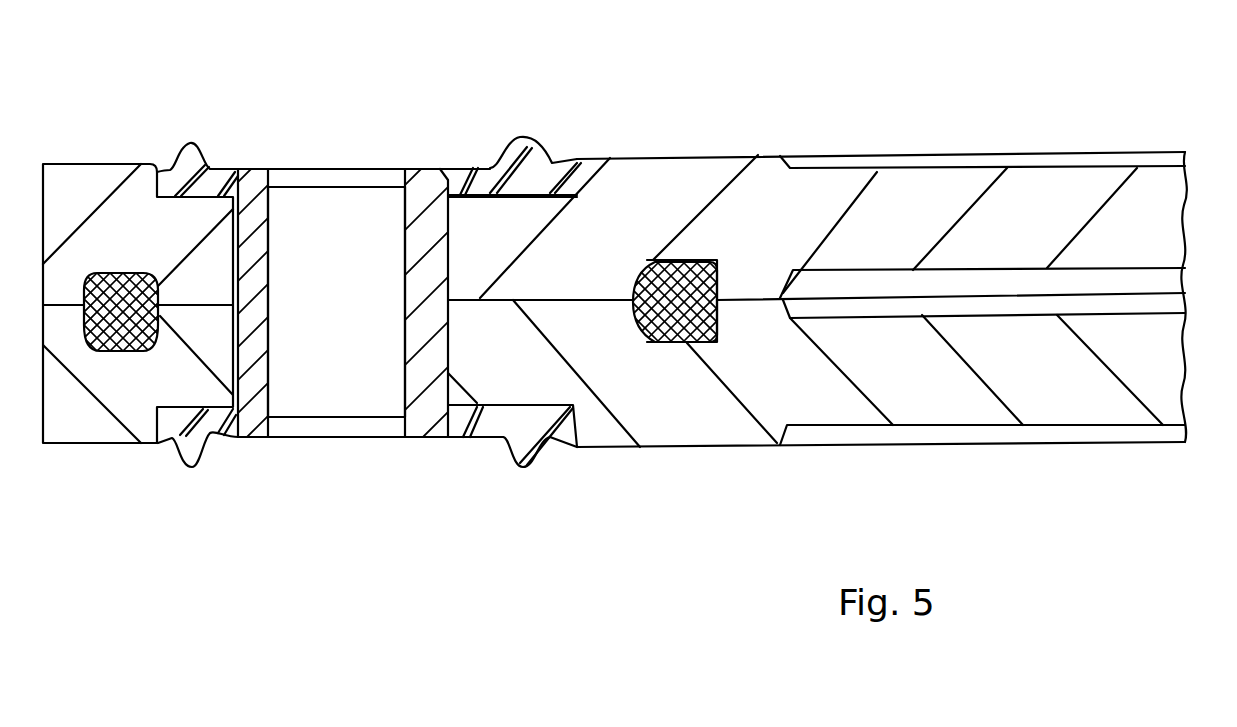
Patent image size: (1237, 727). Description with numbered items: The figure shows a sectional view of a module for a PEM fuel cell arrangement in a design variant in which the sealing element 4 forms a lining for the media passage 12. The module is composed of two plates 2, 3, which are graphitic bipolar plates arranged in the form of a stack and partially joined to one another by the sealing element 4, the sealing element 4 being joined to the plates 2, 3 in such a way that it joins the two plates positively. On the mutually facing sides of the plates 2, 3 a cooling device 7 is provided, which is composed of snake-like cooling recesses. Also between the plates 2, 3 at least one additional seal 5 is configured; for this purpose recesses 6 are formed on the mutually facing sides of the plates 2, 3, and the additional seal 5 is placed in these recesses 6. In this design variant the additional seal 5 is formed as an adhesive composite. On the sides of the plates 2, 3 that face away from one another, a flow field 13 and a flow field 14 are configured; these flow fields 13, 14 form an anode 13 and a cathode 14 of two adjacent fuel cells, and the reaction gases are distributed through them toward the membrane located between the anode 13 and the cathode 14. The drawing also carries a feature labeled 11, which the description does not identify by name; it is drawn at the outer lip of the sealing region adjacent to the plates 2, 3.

The plate 2 is at (880, 213).
The plate 3 is at (913, 397).
The sealing element 4 is at (250, 207).
The additional seal 5 is at (125, 350).
The recesses 6 is at (655, 280).
The cooling device 7 is at (1153, 307).
The sealing lip 11 is at (190, 143).
The media passage 12 is at (330, 220).
The flow field 13 is at (1020, 158).
The flow field 14 is at (1042, 435).